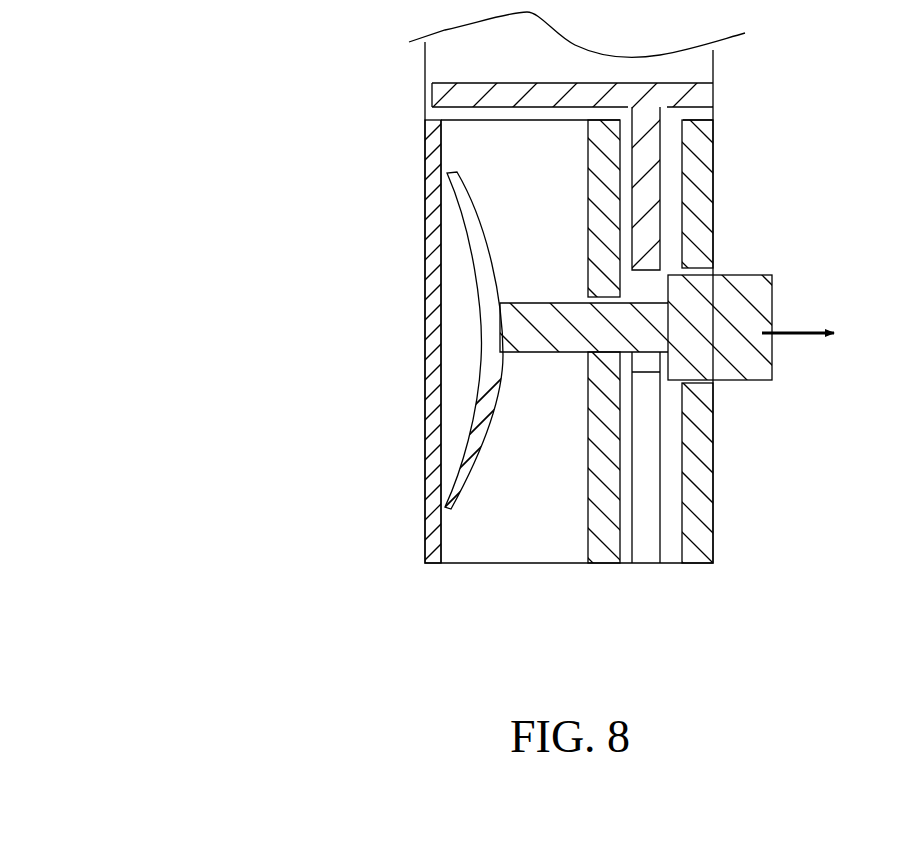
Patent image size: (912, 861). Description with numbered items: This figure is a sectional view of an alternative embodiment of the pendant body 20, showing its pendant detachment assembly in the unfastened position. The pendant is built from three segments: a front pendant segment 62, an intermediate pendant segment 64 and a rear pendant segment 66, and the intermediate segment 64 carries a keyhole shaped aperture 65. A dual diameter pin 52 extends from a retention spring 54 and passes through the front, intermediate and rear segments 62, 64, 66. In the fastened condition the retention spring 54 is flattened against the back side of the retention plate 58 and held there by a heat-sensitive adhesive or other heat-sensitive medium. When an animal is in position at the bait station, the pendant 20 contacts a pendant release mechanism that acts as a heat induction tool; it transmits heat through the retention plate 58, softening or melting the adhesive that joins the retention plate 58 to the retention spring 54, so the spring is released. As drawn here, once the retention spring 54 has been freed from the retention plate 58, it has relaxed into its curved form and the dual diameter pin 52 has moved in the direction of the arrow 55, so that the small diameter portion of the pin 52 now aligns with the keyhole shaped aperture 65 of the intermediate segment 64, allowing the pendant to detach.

The pendant body 20 is at (130, 203).
The dual diameter pin 52 is at (745, 272).
The retention spring 54 is at (478, 442).
The arrow 55 is at (822, 333).
The retention plate 58 is at (418, 343).
The front pendant segment 62 is at (588, 562).
The intermediate pendant segment 64 is at (640, 547).
The keyhole shaped aperture 65 is at (643, 362).
The rear pendant segment 66 is at (713, 567).